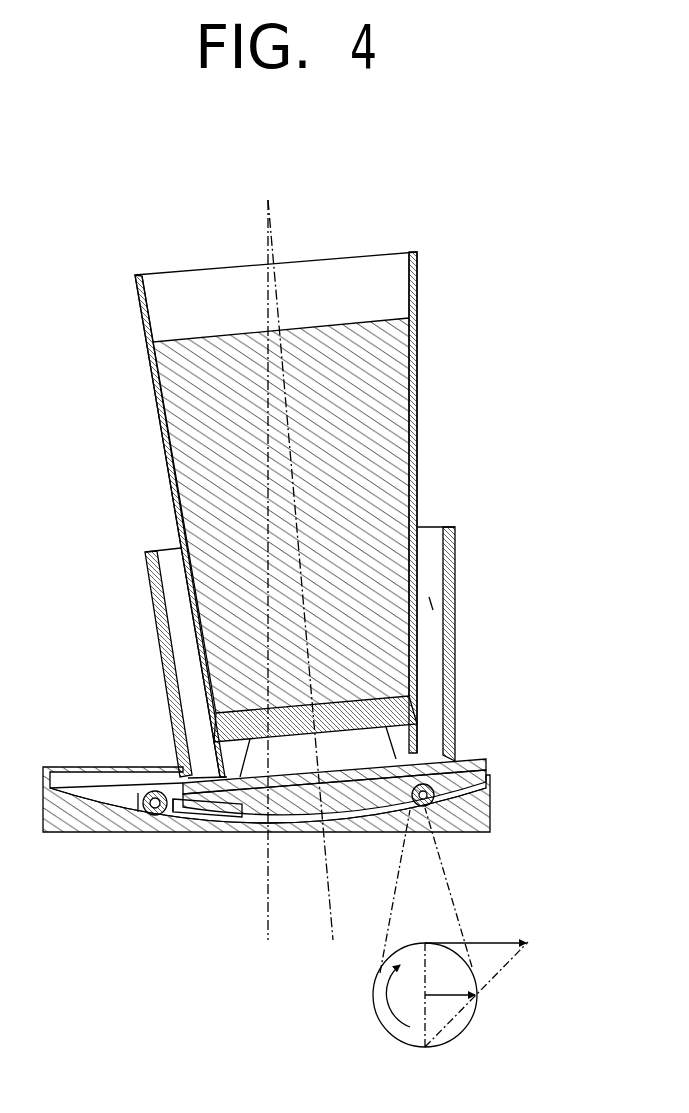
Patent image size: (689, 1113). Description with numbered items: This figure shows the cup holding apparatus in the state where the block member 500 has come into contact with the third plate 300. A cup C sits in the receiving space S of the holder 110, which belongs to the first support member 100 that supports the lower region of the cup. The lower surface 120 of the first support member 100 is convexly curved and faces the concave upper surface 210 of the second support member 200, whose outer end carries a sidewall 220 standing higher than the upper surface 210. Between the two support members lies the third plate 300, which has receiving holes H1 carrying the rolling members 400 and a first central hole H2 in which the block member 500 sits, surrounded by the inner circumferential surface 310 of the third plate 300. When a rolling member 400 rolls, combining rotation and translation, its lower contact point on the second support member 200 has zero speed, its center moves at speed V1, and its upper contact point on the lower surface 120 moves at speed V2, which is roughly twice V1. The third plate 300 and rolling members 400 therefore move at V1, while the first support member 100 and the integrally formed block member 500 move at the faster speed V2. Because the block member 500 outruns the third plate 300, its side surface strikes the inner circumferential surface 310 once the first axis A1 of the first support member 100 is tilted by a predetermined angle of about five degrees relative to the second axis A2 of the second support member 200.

The cup C is at (153, 381).
The first axis A1 is at (275, 234).
The second axis A2 is at (262, 230).
The receiving space S is at (433, 600).
The first support member 100 is at (340, 660).
The holder 110 is at (455, 560).
The lower surface 120 is at (454, 780).
The second support member 200 is at (307, 832).
The upper surface 210 is at (300, 823).
The sidewall 220 is at (490, 768).
The third plate 300 is at (425, 834).
The inner circumferential surface 310 is at (395, 812).
The rolling member 400 is at (143, 818).
The block member 500 is at (237, 818).
The receiving hole H1 is at (137, 813).
The first central hole H2 is at (173, 828).
The speed of the rolling member center V1 is at (467, 1002).
The upper contact speed V2 is at (494, 944).